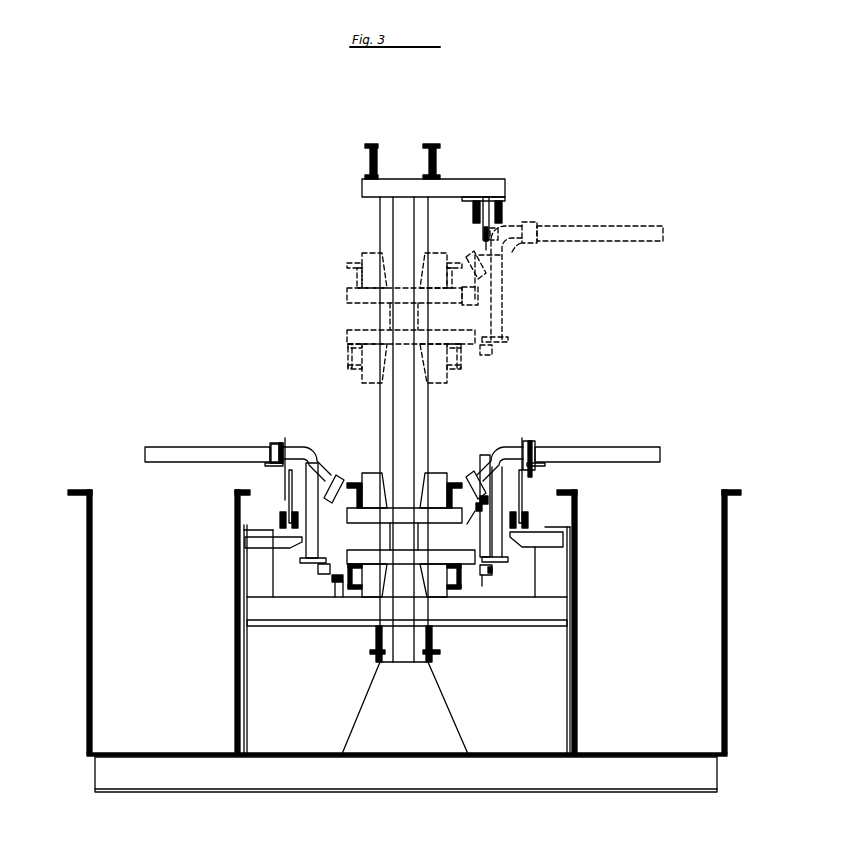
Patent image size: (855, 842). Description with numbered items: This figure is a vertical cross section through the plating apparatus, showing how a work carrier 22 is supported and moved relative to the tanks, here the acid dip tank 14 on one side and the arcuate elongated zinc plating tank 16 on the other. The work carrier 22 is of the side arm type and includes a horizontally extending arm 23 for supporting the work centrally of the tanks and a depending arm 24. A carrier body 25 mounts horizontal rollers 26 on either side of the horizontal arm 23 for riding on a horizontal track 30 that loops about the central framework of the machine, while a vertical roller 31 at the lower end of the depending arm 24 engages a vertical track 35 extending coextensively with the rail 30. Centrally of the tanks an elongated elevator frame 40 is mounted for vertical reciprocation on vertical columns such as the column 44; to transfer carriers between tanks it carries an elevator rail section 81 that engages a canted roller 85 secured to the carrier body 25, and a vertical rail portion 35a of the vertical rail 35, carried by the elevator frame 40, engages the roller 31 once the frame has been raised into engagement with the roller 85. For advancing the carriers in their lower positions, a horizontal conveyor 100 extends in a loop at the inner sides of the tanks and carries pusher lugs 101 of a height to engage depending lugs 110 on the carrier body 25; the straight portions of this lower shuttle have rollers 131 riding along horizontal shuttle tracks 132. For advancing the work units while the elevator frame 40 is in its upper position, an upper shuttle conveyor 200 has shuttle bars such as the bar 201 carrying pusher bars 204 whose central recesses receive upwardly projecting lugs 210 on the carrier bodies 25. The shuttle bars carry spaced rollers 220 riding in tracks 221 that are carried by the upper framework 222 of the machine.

The acid dip tank 14 is at (728, 628).
The zinc plating tank 16 is at (86, 630).
The work carrier 22 is at (300, 443).
The horizontal arm 23 is at (172, 448).
The depending arm 24 is at (505, 559).
The carrier body 25 is at (288, 440).
The horizontal roller 26 is at (277, 442).
The horizontal track 30 is at (266, 465).
The vertical roller 31 is at (498, 574).
The vertical track 35 is at (337, 564).
The vertical rail portion 35a is at (484, 582).
The elevator frame 40 is at (437, 470).
The vertical column 44 is at (432, 406).
The elevator rail section 81 is at (477, 512).
The canted roller 85 is at (336, 478).
The horizontal conveyor 100 is at (283, 548).
The pusher lug 101 is at (292, 500).
The depending lug 110 is at (298, 458).
The roller 131 is at (536, 522).
The horizontal shuttle track 132 is at (536, 512).
The upper shuttle conveyor 200 is at (502, 209).
The shuttle bar 201 is at (488, 205).
The pusher bar 204 is at (494, 236).
The lug 210 is at (481, 240).
The roller 220 is at (500, 207).
The track 221 is at (474, 219).
The upper framework 222 is at (452, 188).